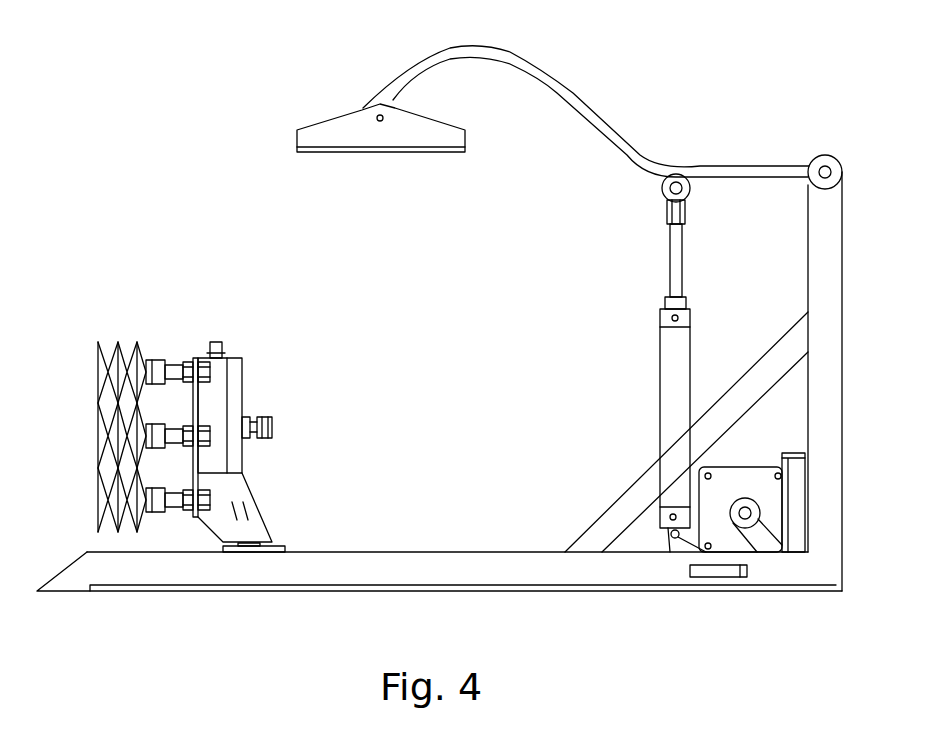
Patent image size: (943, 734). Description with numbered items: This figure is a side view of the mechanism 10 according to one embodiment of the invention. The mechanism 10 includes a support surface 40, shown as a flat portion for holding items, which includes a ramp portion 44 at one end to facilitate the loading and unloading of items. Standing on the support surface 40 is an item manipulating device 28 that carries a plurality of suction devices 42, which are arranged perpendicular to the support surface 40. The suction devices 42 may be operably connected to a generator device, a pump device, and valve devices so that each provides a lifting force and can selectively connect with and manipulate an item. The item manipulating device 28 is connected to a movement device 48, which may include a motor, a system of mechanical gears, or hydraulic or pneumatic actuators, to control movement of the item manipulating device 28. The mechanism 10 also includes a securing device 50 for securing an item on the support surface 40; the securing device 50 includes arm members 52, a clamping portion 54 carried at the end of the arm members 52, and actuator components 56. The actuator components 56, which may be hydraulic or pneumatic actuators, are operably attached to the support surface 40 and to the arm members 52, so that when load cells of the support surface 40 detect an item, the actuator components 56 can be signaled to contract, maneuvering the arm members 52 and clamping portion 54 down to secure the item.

The mechanism 10 is at (200, 225).
The item manipulating device 28 is at (243, 373).
The support surface 40 is at (435, 552).
The suction devices 42 is at (96, 528).
The ramp portion 44 is at (70, 567).
The movement device 48 is at (730, 467).
The securing device 50 is at (727, 112).
The arm members 52 is at (575, 97).
The clamping portion 54 is at (343, 115).
The actuator components 56 is at (693, 357).